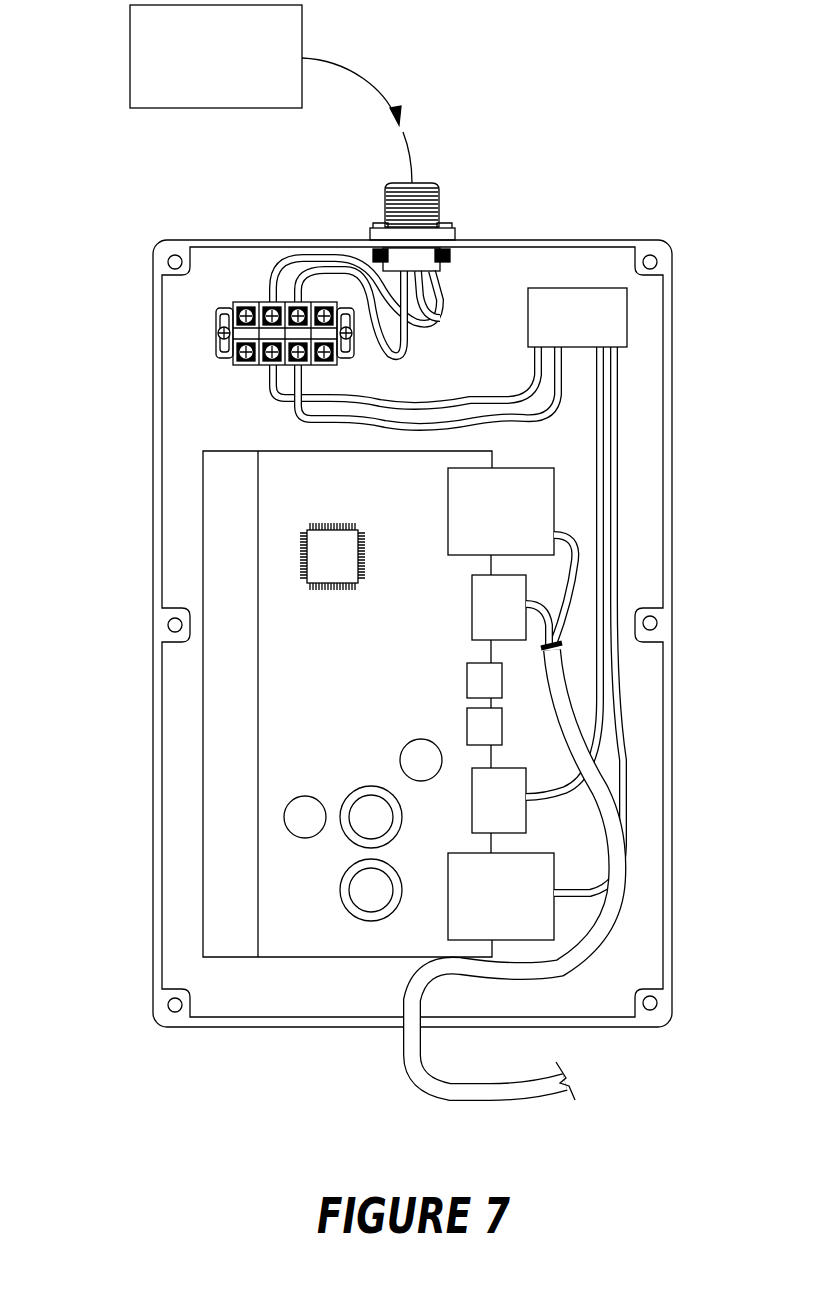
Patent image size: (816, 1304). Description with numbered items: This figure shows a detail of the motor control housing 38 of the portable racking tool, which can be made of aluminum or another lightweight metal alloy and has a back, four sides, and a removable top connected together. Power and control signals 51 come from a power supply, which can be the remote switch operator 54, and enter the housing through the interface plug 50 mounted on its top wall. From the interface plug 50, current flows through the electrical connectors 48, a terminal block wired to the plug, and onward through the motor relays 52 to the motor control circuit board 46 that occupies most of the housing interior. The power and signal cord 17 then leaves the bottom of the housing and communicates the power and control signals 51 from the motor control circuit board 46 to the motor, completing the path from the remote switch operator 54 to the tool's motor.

The power and signal cord 17 is at (412, 994).
The motor control housing 38 is at (157, 820).
The motor control circuit board 46 is at (288, 472).
The electrical connectors 48 is at (256, 302).
The interface plug 50 is at (440, 210).
The power and control signals 51 is at (380, 90).
The motor relays 52 is at (575, 288).
The remote switch operator 54 is at (130, 58).